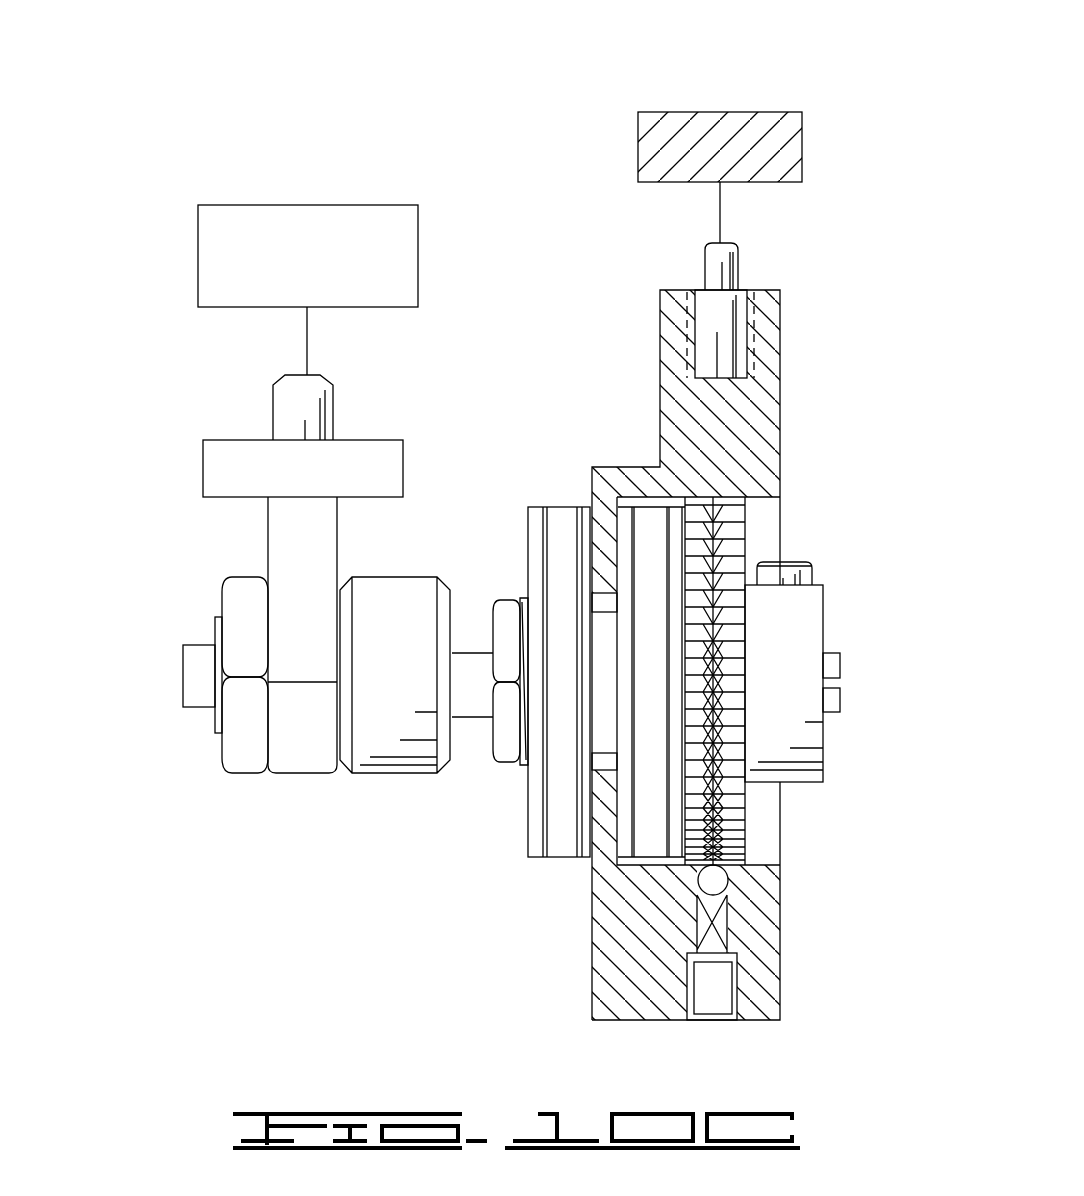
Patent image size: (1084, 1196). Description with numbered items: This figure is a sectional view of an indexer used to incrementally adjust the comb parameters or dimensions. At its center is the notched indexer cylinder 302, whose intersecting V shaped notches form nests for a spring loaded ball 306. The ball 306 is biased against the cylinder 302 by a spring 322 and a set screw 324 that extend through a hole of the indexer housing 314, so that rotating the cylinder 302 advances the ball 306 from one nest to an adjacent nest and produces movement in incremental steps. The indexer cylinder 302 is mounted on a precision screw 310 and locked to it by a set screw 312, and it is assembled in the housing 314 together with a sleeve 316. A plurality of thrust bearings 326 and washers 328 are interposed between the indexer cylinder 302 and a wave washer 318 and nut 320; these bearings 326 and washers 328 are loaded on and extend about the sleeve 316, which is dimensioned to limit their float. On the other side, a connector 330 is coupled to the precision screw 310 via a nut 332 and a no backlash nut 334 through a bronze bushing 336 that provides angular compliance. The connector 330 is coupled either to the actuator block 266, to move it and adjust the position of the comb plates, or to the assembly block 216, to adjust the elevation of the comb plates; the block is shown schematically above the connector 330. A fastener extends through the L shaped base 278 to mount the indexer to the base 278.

The assembly block 216 is at (501, 195).
The actuator block 266 is at (236, 200).
The L shaped base 278 is at (770, 104).
The housing 314 is at (780, 393).
The indexer cylinder 302 is at (733, 515).
The set screw 312 is at (807, 563).
The washers 328 is at (582, 507).
The thrust bearings 326 is at (546, 507).
The sleeve 316 is at (607, 722).
The ball 306 is at (728, 879).
The spring 322 is at (722, 937).
The set screw 324 is at (718, 993).
The nut 320 is at (507, 603).
The wave washer 318 is at (524, 765).
The precision screw 310 is at (184, 676).
The no backlash nut 334 is at (400, 773).
The connector 330 is at (300, 772).
The nut 332 is at (245, 604).
The bronze bushing 336 is at (215, 735).